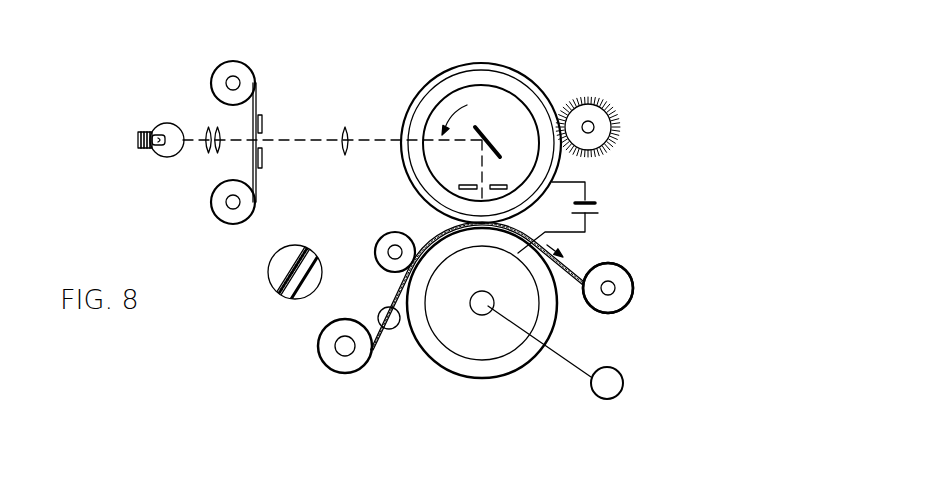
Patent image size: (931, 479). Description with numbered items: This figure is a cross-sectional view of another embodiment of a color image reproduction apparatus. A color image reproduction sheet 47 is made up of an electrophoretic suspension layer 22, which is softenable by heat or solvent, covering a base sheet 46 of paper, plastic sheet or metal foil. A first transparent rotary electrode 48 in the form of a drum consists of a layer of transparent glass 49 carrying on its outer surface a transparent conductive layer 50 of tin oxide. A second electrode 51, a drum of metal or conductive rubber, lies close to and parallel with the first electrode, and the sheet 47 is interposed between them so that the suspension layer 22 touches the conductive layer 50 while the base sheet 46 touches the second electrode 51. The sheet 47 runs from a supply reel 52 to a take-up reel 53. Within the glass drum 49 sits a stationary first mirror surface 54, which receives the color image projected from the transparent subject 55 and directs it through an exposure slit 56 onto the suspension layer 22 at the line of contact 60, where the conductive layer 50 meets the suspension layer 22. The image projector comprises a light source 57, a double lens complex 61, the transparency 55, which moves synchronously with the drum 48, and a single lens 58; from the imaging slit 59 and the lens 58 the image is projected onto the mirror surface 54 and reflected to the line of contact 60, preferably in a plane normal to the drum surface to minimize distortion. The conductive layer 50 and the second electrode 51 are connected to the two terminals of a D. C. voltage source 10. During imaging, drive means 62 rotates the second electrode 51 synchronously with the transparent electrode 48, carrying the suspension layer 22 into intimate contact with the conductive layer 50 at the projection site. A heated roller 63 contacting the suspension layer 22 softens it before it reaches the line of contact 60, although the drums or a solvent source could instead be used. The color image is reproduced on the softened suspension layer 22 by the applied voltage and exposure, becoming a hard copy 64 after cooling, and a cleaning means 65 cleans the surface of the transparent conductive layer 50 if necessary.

The D. C. voltage source 10 is at (598, 213).
The electrophoretic suspension layer 22 is at (382, 309).
The base sheet 46 is at (292, 298).
The color image reproduction sheet 47 is at (429, 229).
The first transparent rotary electrode 48 is at (481, 123).
The transparent glass 49 is at (475, 78).
The transparent conductive layer 50 is at (458, 67).
The second electrode 51 is at (466, 372).
The supply reel 52 is at (347, 375).
The take-up reel 53 is at (602, 313).
The first mirror surface 54 is at (490, 133).
The transparent subject 55 is at (248, 138).
The exposure slit 56 is at (490, 183).
The light source 57 is at (163, 152).
The lens 58 is at (342, 157).
The imaging slit 59 is at (263, 130).
The line of contact 60 is at (508, 227).
The double lens complex 61 is at (207, 113).
The drive means 62 is at (600, 400).
The heated roller 63 is at (375, 240).
The hard copy 64 is at (572, 270).
The cleaning means 65 is at (592, 100).